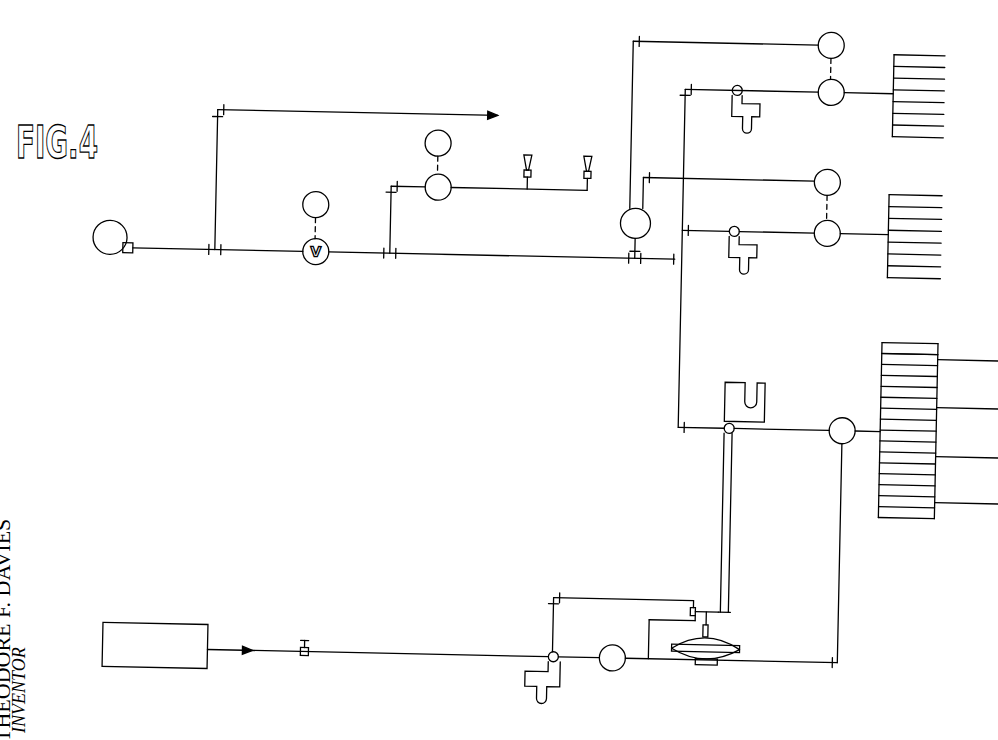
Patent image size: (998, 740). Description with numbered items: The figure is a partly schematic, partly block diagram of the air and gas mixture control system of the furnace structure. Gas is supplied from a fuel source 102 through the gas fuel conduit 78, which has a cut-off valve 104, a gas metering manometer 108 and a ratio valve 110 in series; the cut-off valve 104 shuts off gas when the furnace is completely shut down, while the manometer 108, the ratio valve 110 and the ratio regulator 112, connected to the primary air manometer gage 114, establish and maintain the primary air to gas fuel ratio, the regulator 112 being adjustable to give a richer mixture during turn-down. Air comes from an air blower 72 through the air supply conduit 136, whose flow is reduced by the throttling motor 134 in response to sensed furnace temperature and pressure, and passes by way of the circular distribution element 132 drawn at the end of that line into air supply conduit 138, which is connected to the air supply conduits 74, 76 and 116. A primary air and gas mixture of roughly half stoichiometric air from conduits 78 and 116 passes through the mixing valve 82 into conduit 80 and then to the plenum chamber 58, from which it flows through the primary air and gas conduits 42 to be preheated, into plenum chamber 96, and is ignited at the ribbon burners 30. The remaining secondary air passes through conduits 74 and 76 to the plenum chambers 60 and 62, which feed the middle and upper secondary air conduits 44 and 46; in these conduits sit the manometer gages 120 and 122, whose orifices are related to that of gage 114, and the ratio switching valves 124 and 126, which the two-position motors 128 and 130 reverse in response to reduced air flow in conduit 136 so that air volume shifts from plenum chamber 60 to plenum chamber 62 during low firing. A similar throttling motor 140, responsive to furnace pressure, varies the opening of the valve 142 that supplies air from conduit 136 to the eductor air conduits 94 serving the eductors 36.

The air blower 72 is at (124, 251).
The air supply conduit 136 is at (496, 247).
The throttling motor 134 is at (333, 198).
The throttling motor 140 is at (428, 134).
The valve 142 is at (452, 172).
The air supply conduit 94 is at (510, 180).
The eductor 36 is at (534, 146).
The air distributor 132 is at (625, 210).
The motor 130 is at (842, 24).
The ratio switching valve 126 is at (821, 75).
The air supply conduit 76 is at (868, 77).
The upper secondary air conduit 46 is at (912, 118).
The plenum chamber 62 is at (893, 118).
The air supply conduit 138 is at (687, 132).
The manometer gage 122 is at (754, 116).
The motor 128 is at (844, 165).
The ratio switching valve 124 is at (822, 206).
The manometer gage 120 is at (755, 256).
The air supply conduit 74 is at (868, 218).
The middle secondary air conduit 44 is at (912, 260).
The plenum chamber 60 is at (893, 260).
The primary air manometer gage 114 is at (793, 346).
The air supply conduit 116 is at (818, 388).
The mixing valve 82 is at (840, 423).
The conduit 80 is at (876, 411).
The plenum chamber 58 is at (889, 356).
The primary air and gas conduit 42 is at (910, 499).
The primary air and gas mixture ribbon burner 30 is at (985, 340).
The plenum chamber 96 is at (946, 457).
The gas fuel conduit 78 is at (852, 555).
The fuel source 102 is at (180, 620).
The cut-off valve 104 is at (320, 651).
The gas metering manometer 108 is at (552, 688).
The ratio valve 110 is at (633, 656).
The ratio regulator 112 is at (725, 652).